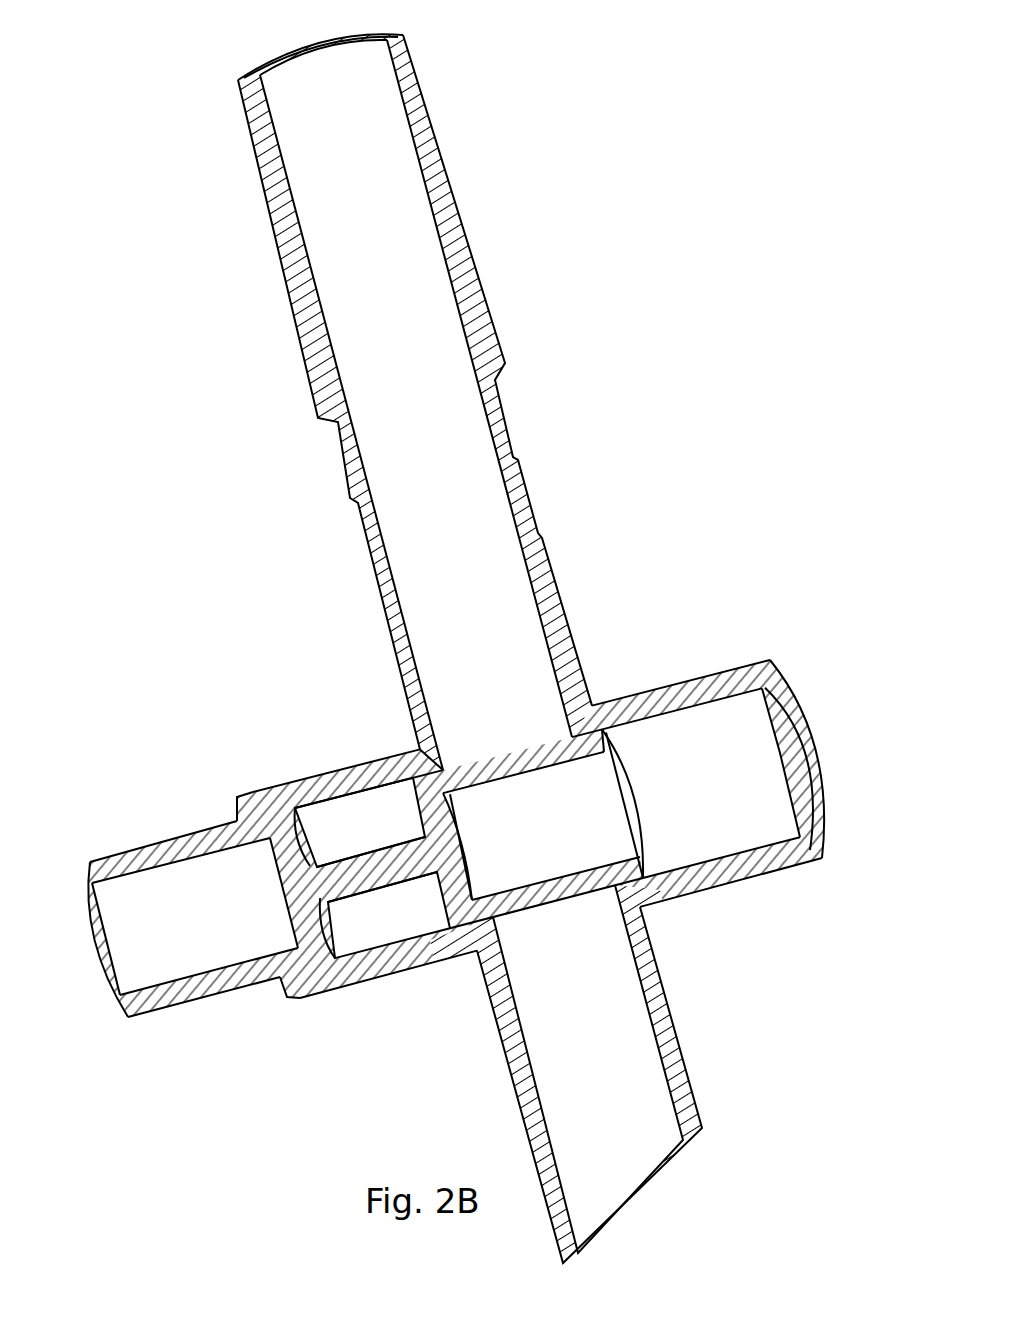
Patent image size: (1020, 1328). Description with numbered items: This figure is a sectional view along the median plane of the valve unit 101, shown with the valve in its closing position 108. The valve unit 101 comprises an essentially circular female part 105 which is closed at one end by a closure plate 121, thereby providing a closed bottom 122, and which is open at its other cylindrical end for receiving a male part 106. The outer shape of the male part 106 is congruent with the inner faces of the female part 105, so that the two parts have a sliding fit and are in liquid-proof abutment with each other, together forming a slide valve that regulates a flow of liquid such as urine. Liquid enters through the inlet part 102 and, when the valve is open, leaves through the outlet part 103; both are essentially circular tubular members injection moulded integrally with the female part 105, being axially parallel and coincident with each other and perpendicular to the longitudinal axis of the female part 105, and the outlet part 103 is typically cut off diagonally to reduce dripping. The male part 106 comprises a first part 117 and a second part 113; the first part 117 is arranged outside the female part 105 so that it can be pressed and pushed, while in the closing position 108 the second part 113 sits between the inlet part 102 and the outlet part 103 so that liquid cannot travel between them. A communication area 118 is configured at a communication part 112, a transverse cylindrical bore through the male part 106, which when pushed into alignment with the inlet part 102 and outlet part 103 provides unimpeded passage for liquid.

The valve unit 101 is at (636, 224).
The inlet part 102 is at (477, 508).
The outlet part 103 is at (627, 1043).
The female part 105 is at (692, 692).
The male part 106 is at (203, 973).
The closing position 108 is at (353, 701).
The communication part 112 is at (377, 932).
The second part 113 is at (577, 748).
The first part 117 is at (135, 862).
The communication area 118 is at (372, 870).
The closure plate 121 is at (780, 733).
The closed bottom 122 is at (782, 860).